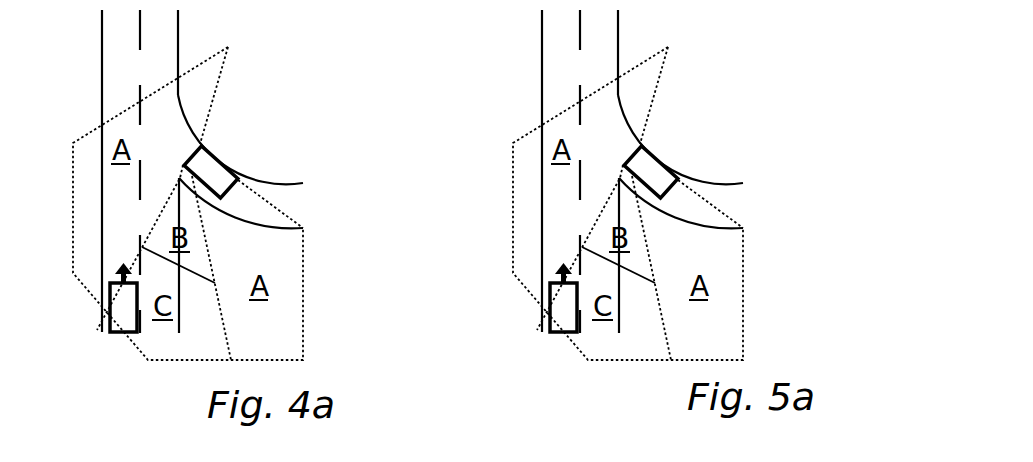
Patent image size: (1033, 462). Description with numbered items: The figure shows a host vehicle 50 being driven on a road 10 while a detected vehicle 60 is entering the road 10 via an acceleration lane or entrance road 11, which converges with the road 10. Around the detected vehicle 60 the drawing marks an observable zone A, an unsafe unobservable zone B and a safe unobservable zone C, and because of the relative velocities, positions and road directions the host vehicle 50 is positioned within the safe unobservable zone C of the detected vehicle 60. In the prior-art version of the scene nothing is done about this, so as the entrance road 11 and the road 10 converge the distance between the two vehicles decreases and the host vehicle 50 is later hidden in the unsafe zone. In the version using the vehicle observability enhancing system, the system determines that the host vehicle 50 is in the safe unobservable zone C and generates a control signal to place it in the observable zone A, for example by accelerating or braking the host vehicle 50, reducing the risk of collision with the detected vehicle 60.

In FIG. 4A, the road 10 is at (102, 54).
In FIG. 5A, the road 10 is at (550, 171).
In FIG. 4A, the acceleration lane or entrance road 11 is at (273, 182).
In FIG. 5A, the acceleration lane or entrance road 11 is at (680, 161).
In FIG. 4A, the host vehicle 50 is at (110, 324).
In FIG. 5A, the host vehicle 50 is at (536, 311).
In FIG. 4A, the detected vehicle 60 is at (228, 158).
In FIG. 5A, the detected vehicle 60 is at (657, 155).